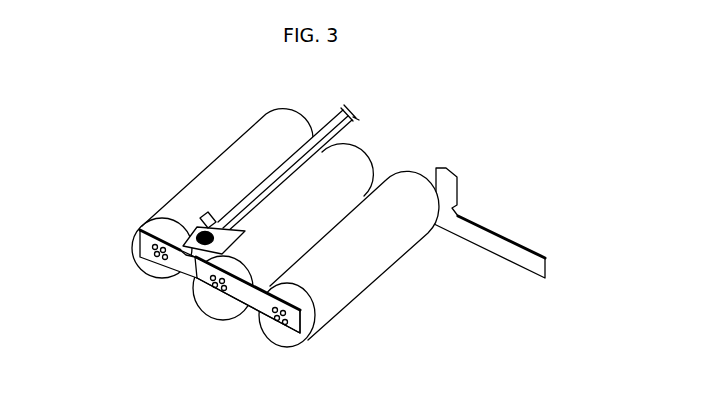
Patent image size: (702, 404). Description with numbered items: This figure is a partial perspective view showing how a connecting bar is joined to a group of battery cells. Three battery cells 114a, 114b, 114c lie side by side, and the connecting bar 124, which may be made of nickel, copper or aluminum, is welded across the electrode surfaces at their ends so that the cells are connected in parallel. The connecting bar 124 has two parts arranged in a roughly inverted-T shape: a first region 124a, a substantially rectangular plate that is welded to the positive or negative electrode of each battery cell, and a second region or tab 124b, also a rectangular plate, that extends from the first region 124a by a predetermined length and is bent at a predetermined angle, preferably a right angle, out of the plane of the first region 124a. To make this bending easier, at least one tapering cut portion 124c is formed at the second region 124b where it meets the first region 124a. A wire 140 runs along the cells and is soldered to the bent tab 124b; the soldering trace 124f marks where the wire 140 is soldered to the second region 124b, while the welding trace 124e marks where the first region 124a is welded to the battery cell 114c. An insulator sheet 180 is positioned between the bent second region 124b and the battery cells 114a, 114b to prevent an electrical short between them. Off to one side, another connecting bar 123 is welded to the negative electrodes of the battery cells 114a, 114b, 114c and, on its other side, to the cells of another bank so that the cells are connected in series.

The battery cell 114a is at (237, 154).
The battery cell 114b is at (353, 162).
The battery cell 114c is at (397, 247).
The wire 140 is at (323, 128).
The connecting bar 123 is at (502, 224).
The connecting bar 124 is at (187, 271).
The first region 124a is at (246, 299).
The second region (tab) 124b is at (200, 228).
The cut portion 124c is at (196, 264).
The welding trace 124e is at (277, 320).
The soldering trace 124f is at (183, 230).
The insulator sheet 180 is at (211, 217).